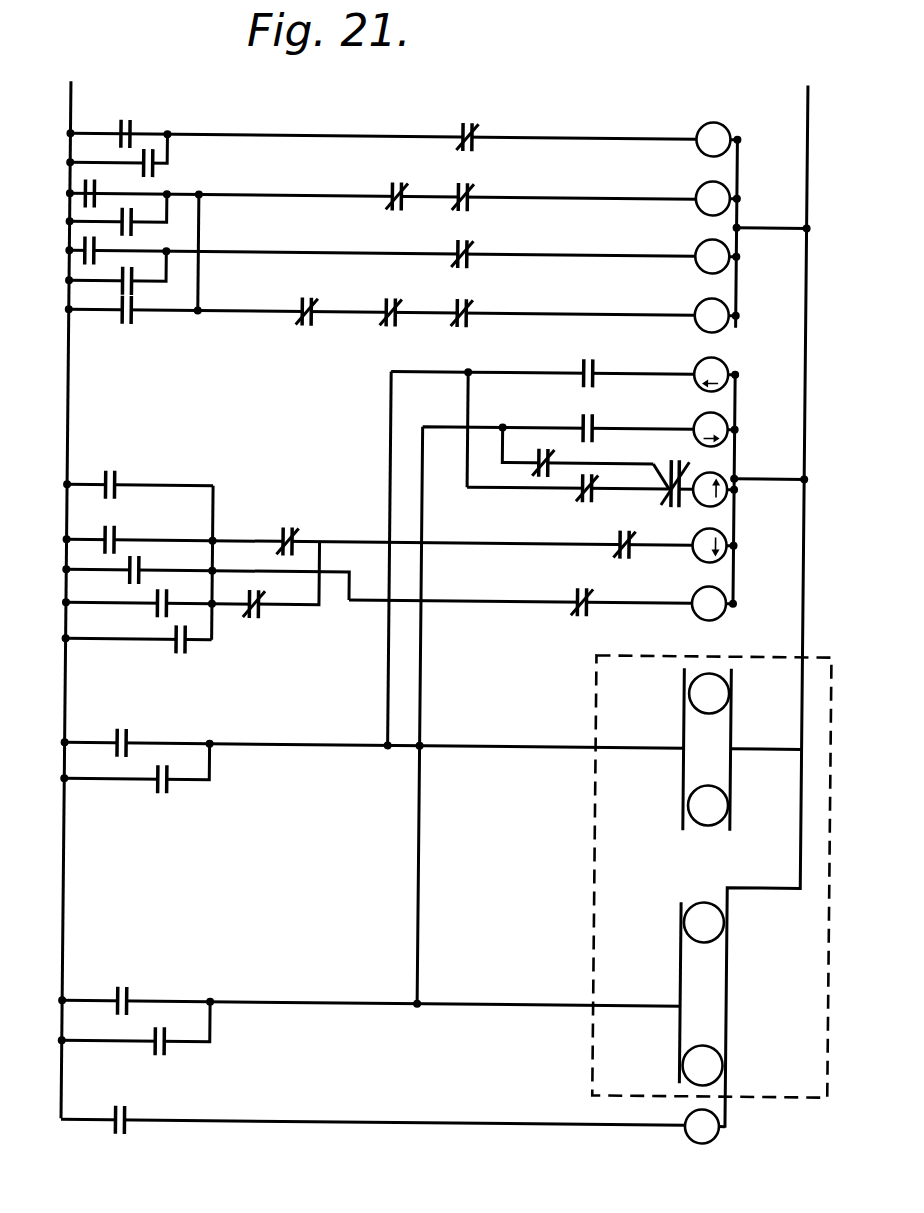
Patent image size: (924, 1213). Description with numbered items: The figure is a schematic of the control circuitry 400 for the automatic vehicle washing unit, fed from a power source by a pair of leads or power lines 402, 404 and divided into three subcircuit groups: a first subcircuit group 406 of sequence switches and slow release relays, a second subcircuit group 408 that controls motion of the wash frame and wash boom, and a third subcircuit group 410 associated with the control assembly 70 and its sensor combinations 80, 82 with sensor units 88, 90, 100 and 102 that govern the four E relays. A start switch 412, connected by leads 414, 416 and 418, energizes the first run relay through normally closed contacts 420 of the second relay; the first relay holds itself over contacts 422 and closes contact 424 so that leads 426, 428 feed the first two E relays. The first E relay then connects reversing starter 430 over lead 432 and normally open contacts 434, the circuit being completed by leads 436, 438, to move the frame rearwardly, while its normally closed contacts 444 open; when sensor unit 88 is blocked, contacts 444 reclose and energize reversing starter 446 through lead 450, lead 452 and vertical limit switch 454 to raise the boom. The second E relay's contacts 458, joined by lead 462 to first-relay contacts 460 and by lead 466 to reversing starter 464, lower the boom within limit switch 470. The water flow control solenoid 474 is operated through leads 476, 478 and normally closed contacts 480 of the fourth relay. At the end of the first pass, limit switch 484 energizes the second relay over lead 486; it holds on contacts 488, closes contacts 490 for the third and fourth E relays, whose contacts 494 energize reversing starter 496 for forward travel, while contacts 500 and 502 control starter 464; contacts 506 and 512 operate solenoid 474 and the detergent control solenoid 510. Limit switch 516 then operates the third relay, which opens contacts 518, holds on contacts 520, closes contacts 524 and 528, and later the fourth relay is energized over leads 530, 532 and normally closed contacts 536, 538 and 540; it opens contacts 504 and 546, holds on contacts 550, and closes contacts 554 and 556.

The control circuitry 400 is at (611, 128).
The power line 402 is at (65, 104).
The power line 404 is at (805, 100).
The first subcircuit group 406 is at (287, 132).
The second subcircuit group 408 is at (330, 448).
The third subcircuit group 410 is at (294, 740).
The start switch 412 is at (116, 127).
The lead 414 is at (318, 140).
The lead 416 is at (737, 170).
The lead 418 is at (769, 222).
The normally closed contacts of R2 relay 420 is at (470, 128).
The normally open contacts of R1 relay 422 is at (155, 160).
The contact of R1 relay 424 is at (133, 733).
The lead 426 is at (79, 742).
The lead 428 is at (349, 750).
The reversing starter 430 is at (720, 357).
The lead 432 is at (388, 476).
The normally open contacts of E1 relay 434 is at (591, 368).
The lead 436 is at (735, 452).
The lead 438 is at (771, 477).
The normally closed contacts of E1 relay 444 is at (580, 500).
The reversing starter 446 is at (790, 530).
The lead 450 is at (477, 490).
The lead 452 is at (616, 493).
The vertical limit switch 454 is at (672, 458).
The normally closed contacts of E2 relay 458 is at (333, 530).
The normally open contacts of R1 relay 460 is at (150, 524).
The lead 462 is at (192, 542).
The reversing starter 464 is at (788, 568).
The lead 466 is at (477, 546).
The limit switch 470 is at (614, 558).
The water flow control solenoid 474 is at (712, 612).
The lead 476 is at (217, 561).
The lead 478 is at (469, 607).
The normally closed contacts of R4 relay 480 is at (568, 608).
The limit switch LS1 484 is at (80, 192).
The lead 486 is at (250, 200).
The normally open contacts of R2 relay 488 is at (110, 219).
The normally open contacts of R2 relay 490 is at (176, 968).
The normally open contacts of E3 relay 494 is at (655, 413).
The reversing starter 496 is at (537, 452).
The normally closed contacts of E4 relay 500 is at (258, 597).
The normally open contacts of R2 relay 502 is at (170, 600).
The normally closed contacts of R4 relay 504 is at (477, 244).
The normally open contacts of R2 relay 506 is at (118, 480).
The detergent control solenoid 510 is at (720, 1140).
The normally open R2 relay contacts 512 is at (128, 1111).
The limit switch LS2 516 is at (66, 243).
The normally closed contacts of R3 relay 518 is at (474, 189).
The normally open contacts of R3 relay 520 is at (118, 280).
The normally open contacts of R3 relay 524 is at (172, 790).
The contacts of R3 relay 528 is at (140, 566).
The lead 530 is at (198, 285).
The lead 532 is at (233, 320).
The normally closed contacts of R2 relay 536 is at (320, 303).
The normally closed contacts of R1 relay 538 is at (400, 306).
The LS2 limit switch contacts 540 is at (472, 307).
The normally closed contacts of R4 relay 546 is at (390, 212).
The normally open contacts of R4 relay 550 is at (120, 322).
The contacts of R4 relay 554 is at (172, 1036).
The contacts of R4 relay 556 is at (174, 651).
The control assembly 70 is at (572, 915).
The sensor combination 80 is at (662, 744).
The sensor combination 82 is at (670, 996).
The sensor unit 88 is at (737, 724).
The sensor unit 90 is at (738, 821).
The sensor unit 100 is at (735, 943).
The sensor unit 102 is at (737, 1062).